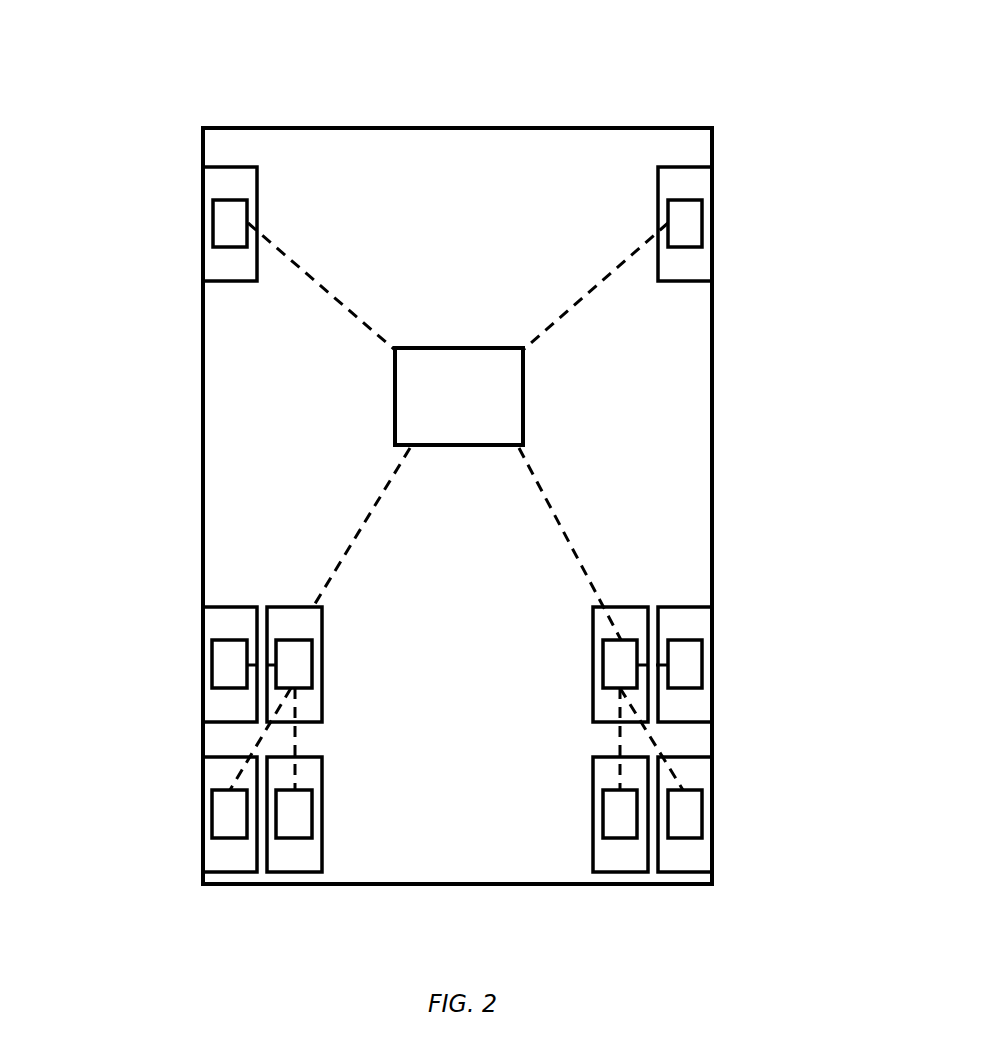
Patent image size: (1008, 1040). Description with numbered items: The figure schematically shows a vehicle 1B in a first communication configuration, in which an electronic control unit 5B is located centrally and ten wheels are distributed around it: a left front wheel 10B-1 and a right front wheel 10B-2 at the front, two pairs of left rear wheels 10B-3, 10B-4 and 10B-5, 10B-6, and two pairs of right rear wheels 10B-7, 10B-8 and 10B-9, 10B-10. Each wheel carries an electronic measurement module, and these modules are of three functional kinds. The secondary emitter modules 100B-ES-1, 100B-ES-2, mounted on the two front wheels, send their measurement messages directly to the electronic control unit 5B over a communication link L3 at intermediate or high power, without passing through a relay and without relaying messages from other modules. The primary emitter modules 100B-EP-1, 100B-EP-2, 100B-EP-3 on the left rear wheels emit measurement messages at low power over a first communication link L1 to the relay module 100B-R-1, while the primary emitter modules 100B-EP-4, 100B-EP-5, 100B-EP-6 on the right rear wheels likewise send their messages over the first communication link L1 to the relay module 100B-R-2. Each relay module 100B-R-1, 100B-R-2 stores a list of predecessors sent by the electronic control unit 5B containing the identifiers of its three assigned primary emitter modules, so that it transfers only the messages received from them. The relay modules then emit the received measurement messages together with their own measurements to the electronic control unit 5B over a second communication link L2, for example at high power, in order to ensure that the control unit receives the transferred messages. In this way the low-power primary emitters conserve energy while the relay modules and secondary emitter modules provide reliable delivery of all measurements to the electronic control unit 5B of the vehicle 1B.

The vehicle 1B is at (521, 128).
The electronic control unit 5B is at (475, 412).
The left front wheel 10B-1 is at (216, 187).
The right front wheel 10B-2 is at (698, 184).
The left rear front left wheel 10B-3 is at (217, 627).
The left rear front right wheel 10B-4 is at (325, 627).
The left rear rear left wheel 10B-5 is at (216, 776).
The left rear rear right wheel 10B-6 is at (325, 777).
The right rear front left wheel 10B-7 is at (598, 625).
The right rear front right wheel 10B-8 is at (703, 624).
The right rear rear left wheel 10B-9 is at (598, 776).
The right rear rear right wheel 10B-10 is at (703, 775).
The secondary emitter module 100B-ES-1 is at (214, 224).
The secondary emitter module 100B-ES-2 is at (701, 224).
The primary emitter module 100B-EP-1 is at (214, 665).
The relay module 100B-R-1 is at (314, 672).
The primary emitter module 100B-EP-2 is at (214, 815).
The primary emitter module 100B-EP-3 is at (314, 818).
The relay module 100B-R-2 is at (599, 664).
The primary emitter module 100B-EP-4 is at (703, 665).
The primary emitter module 100B-EP-5 is at (599, 815).
The primary emitter module 100B-EP-6 is at (703, 815).
The first communication link L1 is at (262, 665).
The second communication link L2 is at (467, 544).
The communication link L3 is at (458, 286).